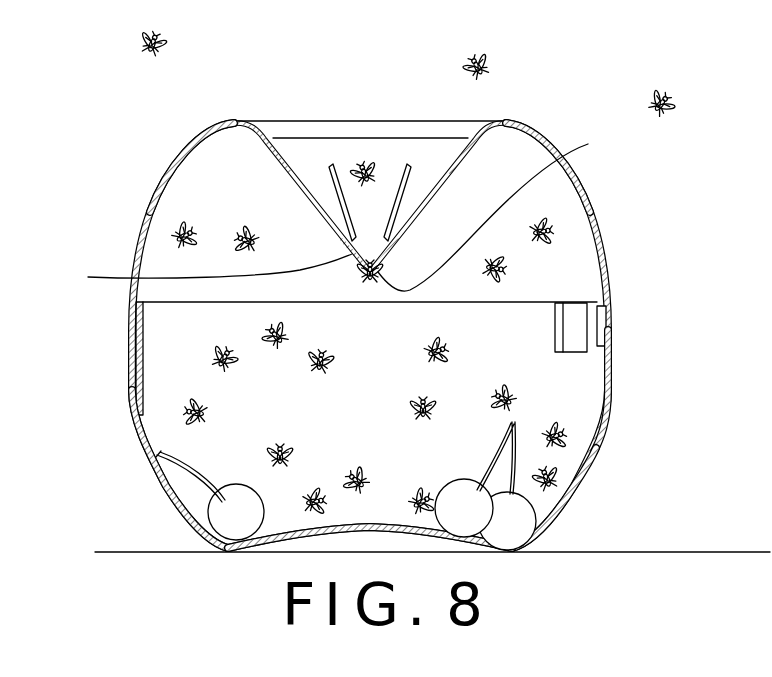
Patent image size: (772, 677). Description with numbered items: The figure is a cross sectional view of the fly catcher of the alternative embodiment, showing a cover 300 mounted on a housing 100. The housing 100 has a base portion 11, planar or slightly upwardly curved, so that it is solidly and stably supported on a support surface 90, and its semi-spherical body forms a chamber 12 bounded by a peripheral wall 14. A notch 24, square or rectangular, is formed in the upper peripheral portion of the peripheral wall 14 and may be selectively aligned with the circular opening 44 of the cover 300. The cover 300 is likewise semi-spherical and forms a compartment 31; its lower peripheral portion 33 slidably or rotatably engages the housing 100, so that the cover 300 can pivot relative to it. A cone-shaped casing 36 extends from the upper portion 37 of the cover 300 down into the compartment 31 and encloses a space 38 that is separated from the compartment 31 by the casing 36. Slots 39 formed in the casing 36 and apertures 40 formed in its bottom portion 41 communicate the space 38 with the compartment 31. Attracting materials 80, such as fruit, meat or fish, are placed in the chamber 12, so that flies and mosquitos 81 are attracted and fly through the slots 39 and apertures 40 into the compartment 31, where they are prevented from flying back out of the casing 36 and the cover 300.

The cover 300 is at (143, 222).
The compartment 31 is at (150, 210).
The cone-shaped casing 36 is at (274, 140).
The slots 39 is at (410, 165).
The space 38 is at (460, 143).
The upper portion 37 is at (511, 122).
The apertures 40 is at (499, 205).
The flies and/or mosquitos 81 is at (447, 350).
The bottom portion 41 is at (199, 275).
The circular opening 44 is at (608, 331).
The lower peripheral portion 33 is at (127, 333).
The notch 24 is at (577, 353).
The peripheral wall 14 is at (608, 407).
The housing 100 is at (150, 468).
The chamber 12 is at (630, 478).
The attracting materials 80 is at (457, 520).
The base portion 11 is at (477, 543).
The support surface 90 is at (689, 585).